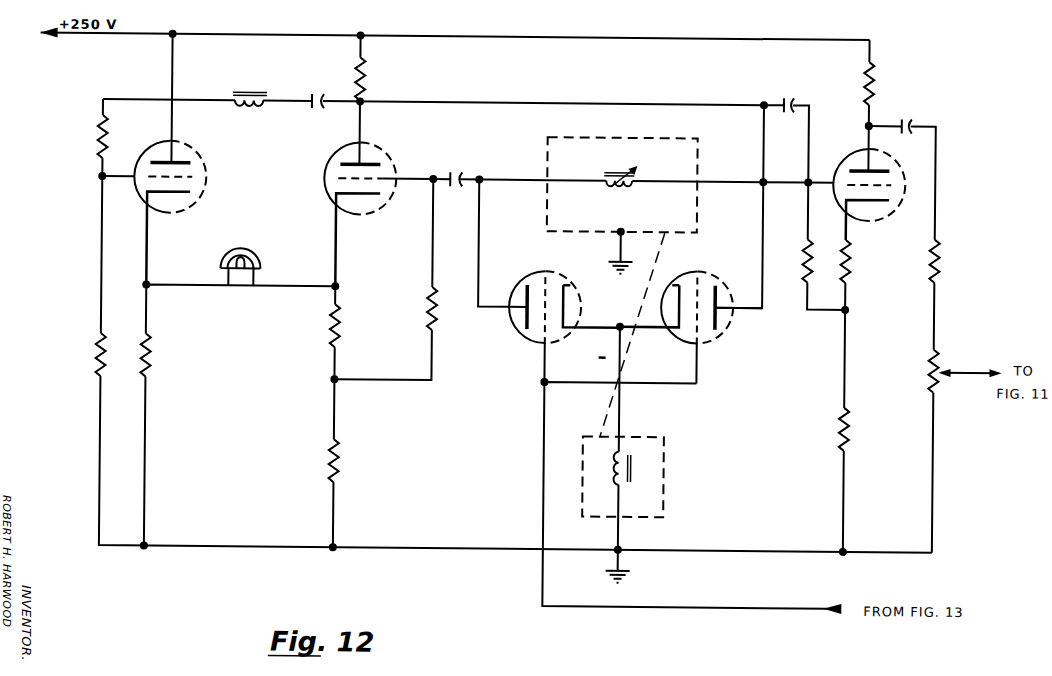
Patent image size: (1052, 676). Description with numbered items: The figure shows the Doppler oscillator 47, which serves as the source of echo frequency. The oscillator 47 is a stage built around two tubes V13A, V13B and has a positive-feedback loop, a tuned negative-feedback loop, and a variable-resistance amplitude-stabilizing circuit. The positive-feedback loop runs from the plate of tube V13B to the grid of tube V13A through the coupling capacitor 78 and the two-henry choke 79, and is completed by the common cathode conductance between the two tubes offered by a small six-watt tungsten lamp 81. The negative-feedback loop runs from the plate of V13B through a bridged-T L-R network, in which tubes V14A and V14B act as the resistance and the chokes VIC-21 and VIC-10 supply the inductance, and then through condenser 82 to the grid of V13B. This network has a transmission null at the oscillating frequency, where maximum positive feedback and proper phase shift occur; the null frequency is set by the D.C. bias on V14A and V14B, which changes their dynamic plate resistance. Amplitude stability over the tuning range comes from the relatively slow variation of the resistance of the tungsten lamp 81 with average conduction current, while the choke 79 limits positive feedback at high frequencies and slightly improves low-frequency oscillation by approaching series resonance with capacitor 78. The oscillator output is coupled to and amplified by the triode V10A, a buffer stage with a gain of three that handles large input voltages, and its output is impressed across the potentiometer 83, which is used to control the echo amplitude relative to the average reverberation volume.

The choke 79 is at (266, 91).
The capacitor 78 is at (317, 104).
The condenser 82 is at (458, 174).
The tungsten lamp 81 is at (251, 247).
The potentiometer 83 is at (945, 351).
The oscillator 47 is at (215, 578).
The tube V13A is at (207, 166).
The tube V13B is at (385, 146).
The tube V14A is at (538, 258).
The tube V14B is at (709, 267).
The triode V10A is at (861, 215).
The choke VIC-21 is at (592, 133).
The choke VIC-10 is at (647, 432).